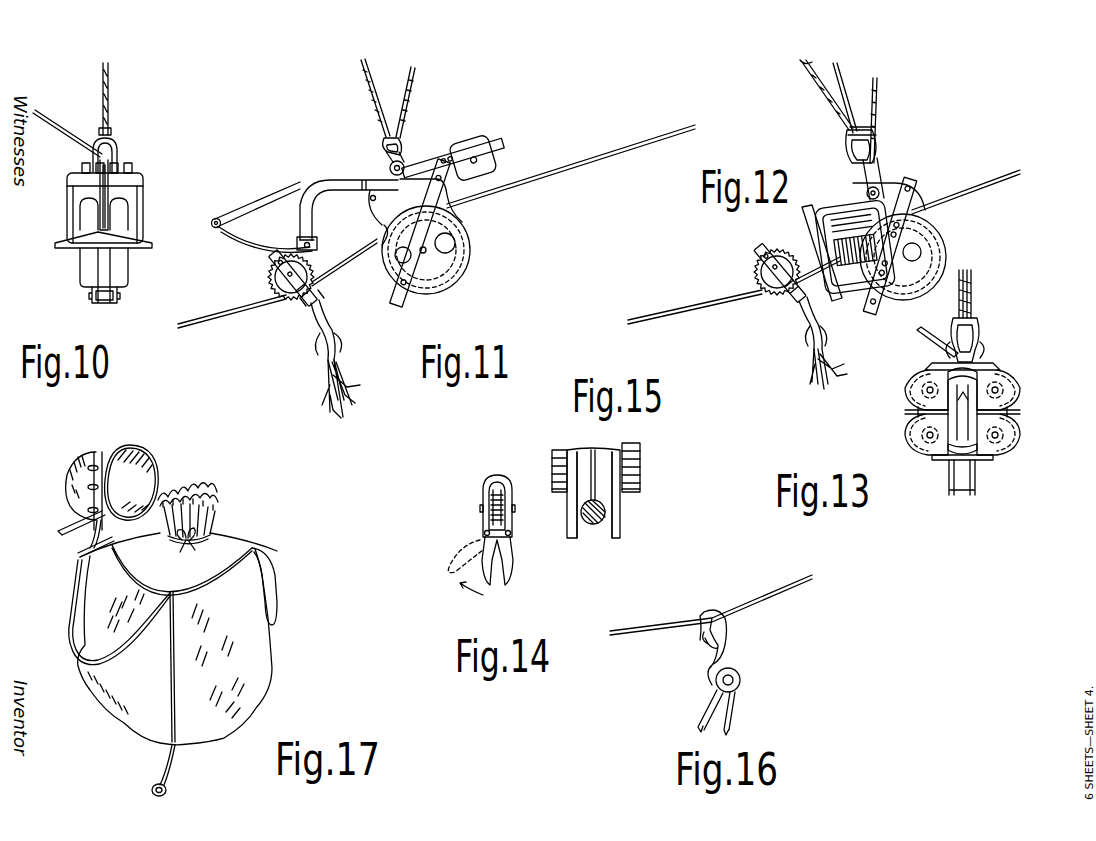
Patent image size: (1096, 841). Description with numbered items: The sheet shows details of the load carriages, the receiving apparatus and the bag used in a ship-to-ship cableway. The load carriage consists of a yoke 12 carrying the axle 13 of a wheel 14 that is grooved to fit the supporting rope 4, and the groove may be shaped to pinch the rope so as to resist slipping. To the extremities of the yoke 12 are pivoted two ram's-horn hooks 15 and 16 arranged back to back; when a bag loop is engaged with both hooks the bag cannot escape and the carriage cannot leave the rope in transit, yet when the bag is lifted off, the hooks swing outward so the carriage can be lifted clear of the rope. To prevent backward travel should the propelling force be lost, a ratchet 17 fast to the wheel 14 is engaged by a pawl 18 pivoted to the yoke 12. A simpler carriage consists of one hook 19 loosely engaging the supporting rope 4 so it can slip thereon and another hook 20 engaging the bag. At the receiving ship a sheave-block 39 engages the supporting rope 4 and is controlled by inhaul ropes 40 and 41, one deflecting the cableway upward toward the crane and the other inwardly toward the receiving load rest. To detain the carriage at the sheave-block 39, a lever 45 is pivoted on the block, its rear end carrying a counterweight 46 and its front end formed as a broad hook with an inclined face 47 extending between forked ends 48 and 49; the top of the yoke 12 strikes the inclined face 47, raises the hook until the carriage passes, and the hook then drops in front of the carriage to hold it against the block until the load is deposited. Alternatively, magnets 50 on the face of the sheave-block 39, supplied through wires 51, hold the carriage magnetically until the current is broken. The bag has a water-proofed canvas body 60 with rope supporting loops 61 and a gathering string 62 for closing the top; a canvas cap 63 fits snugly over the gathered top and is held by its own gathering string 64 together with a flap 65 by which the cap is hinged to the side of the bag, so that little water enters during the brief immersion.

In FIG. 11, the supporting rope 4 is at (552, 173).
In FIG. 12, the supporting rope 4 is at (980, 187).
In FIG. 15, the supporting rope 4 is at (595, 525).
In FIG. 11, the yoke 12 is at (275, 260).
In FIG. 12, the yoke 12 is at (755, 251).
In FIG. 14, the yoke 12 is at (500, 478).
In FIG. 11, the axle 13 is at (292, 287).
In FIG. 14, the axle 13 is at (482, 508).
In FIG. 11, the wheel 14 is at (313, 283).
In FIG. 14, the wheel 14 is at (493, 495).
In FIG. 15, the wheel 14 is at (613, 518).
In FIG. 11, the hook 15 is at (337, 328).
In FIG. 12, the hook 15 is at (825, 329).
In FIG. 14, the hook 15 is at (510, 567).
In FIG. 14, the hook 16 is at (490, 577).
In FIG. 12, the ratchet 17 is at (770, 279).
In FIG. 14, the ratchet 17 is at (508, 515).
In FIG. 15, the ratchet 17 is at (563, 453).
In FIG. 11, the pawl 18 is at (277, 278).
In FIG. 12, the pawl 18 is at (755, 268).
In FIG. 14, the pawl 18 is at (488, 482).
In FIG. 16, the hook 19 is at (723, 642).
In FIG. 16, the hook 20 is at (740, 682).
In FIG. 10, the sheave-block 39 is at (104, 280).
In FIG. 11, the sheave-block 39 is at (462, 238).
In FIG. 12, the sheave-block 39 is at (930, 253).
In FIG. 13, the sheave-block 39 is at (960, 468).
In FIG. 10, the inhaul rope 40 is at (72, 140).
In FIG. 11, the inhaul rope 40 is at (408, 97).
In FIG. 12, the inhaul rope 40 is at (875, 120).
In FIG. 10, the inhaul rope 41 is at (109, 100).
In FIG. 11, the inhaul rope 41 is at (367, 88).
In FIG. 12, the inhaul rope 41 is at (833, 92).
In FIG. 13, the inhaul rope 41 is at (986, 295).
In FIG. 10, the lever 45 is at (112, 185).
In FIG. 11, the lever 45 is at (335, 180).
In FIG. 11, the counterweight 46 is at (473, 148).
In FIG. 10, the inclined face 47 is at (87, 243).
In FIG. 11, the inclined face 47 is at (233, 243).
In FIG. 10, the forked end 48 is at (143, 228).
In FIG. 11, the forked end 48 is at (313, 222).
In FIG. 10, the forked end 49 is at (67, 228).
In FIG. 12, the magnet 50 is at (815, 233).
In FIG. 13, the magnet 50 is at (928, 385).
In FIG. 12, the wire 51 is at (853, 150).
In FIG. 13, the wire 51 is at (973, 353).
In FIG. 17, the canvas body 60 is at (138, 710).
In FIG. 17, the rope supporting loop 61 is at (277, 588).
In FIG. 17, the gathering string 62 is at (217, 535).
In FIG. 17, the canvas cap 63 is at (142, 482).
In FIG. 17, the gathering string 64 is at (97, 462).
In FIG. 17, the flap 65 is at (95, 550).